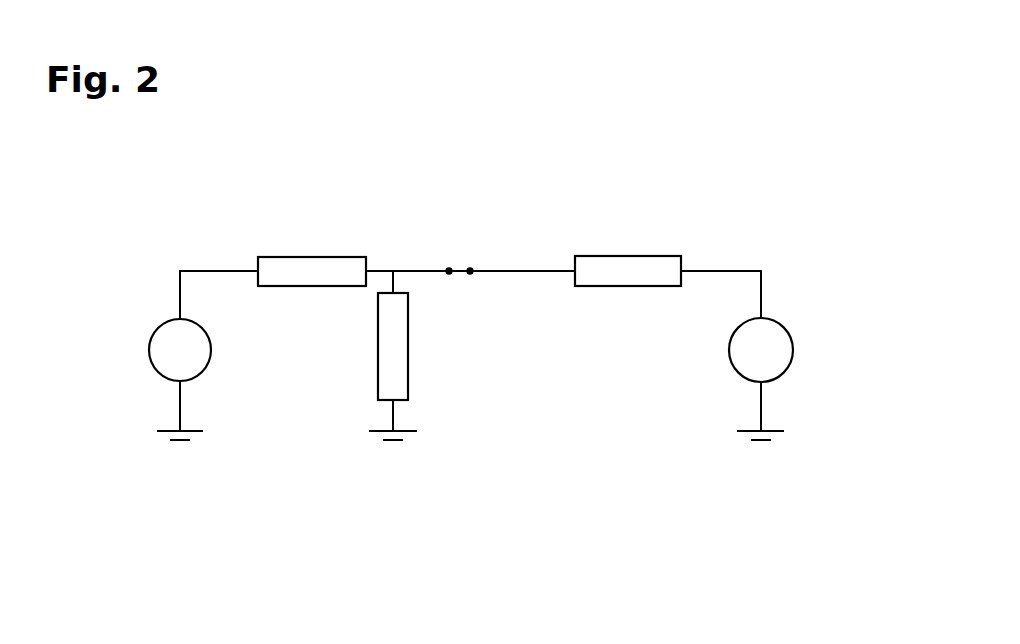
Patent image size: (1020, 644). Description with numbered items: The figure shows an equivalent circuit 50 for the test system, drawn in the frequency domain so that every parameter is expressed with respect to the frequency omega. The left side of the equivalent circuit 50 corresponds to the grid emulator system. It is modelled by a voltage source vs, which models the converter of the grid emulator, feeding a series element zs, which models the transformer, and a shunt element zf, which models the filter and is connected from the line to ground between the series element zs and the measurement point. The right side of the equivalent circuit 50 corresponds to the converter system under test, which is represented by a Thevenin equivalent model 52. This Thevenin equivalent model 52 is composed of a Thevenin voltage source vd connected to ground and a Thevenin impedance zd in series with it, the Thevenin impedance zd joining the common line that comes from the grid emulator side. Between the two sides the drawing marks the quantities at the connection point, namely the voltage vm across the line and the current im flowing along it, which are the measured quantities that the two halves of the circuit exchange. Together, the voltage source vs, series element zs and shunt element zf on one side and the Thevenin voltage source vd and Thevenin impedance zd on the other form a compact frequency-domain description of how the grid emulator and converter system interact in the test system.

The equivalent circuit 50 is at (163, 206).
The Thevenin equivalent model 52 is at (793, 231).
The voltage source vs is at (163, 355).
The series element zs is at (312, 255).
The shunt element zf is at (362, 355).
The Thevenin impedance zd is at (628, 255).
The Thevenin voltage source vd is at (769, 355).
The measured voltage v_m(ω) vm is at (464, 250).
The measured current i_m(ω) im is at (461, 294).